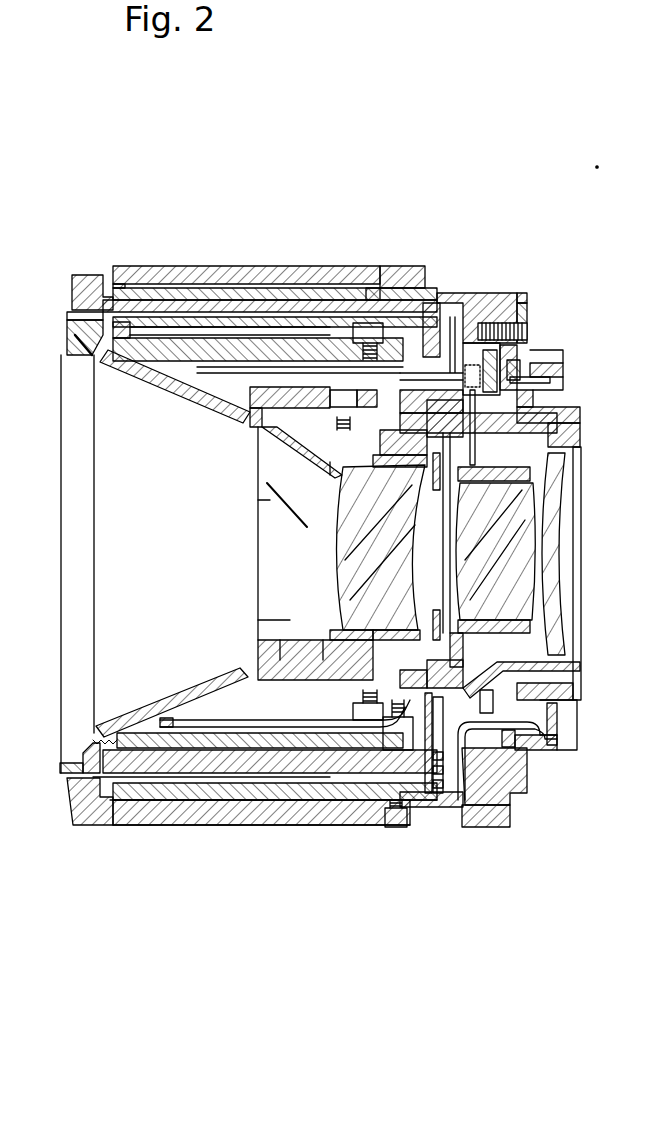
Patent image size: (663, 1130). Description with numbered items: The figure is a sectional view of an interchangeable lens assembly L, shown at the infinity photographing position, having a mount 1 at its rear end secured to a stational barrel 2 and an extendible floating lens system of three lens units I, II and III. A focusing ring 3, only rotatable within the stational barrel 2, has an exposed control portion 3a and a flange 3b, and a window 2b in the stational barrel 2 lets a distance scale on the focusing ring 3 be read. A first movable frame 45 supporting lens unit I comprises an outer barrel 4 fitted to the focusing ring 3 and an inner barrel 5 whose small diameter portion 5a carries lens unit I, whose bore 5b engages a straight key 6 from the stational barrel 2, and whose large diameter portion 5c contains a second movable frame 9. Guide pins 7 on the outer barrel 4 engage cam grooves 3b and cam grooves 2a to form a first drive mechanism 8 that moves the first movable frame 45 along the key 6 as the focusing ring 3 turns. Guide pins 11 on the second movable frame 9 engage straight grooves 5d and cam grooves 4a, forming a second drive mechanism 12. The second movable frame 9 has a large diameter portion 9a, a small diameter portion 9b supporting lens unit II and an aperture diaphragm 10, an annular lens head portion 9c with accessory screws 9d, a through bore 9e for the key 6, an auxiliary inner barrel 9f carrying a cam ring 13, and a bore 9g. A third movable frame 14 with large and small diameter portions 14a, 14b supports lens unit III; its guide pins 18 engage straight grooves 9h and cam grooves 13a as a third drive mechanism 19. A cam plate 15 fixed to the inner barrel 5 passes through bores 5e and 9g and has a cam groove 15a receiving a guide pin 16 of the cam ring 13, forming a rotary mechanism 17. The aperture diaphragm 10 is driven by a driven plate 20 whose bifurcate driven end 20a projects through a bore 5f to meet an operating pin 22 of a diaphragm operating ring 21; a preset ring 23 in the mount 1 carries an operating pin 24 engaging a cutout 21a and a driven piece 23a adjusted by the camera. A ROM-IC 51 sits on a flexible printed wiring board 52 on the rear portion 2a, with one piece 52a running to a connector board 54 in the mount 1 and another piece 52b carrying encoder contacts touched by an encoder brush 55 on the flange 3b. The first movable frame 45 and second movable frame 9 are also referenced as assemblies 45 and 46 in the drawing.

The mount 1 is at (565, 368).
The stational barrel 2 is at (503, 292).
The cam groove 2a is at (300, 825).
The window 2b is at (373, 288).
The focusing ring 3 is at (230, 284).
The control portion 3a is at (88, 272).
The cam groove 3b is at (258, 825).
The outer barrel 4 is at (412, 293).
The cam groove 4a is at (362, 323).
The first movable frame 45 is at (415, 210).
The ring assembly 46 is at (337, 878).
The inner barrel 5 is at (428, 293).
The small diameter portion 5a is at (560, 430).
The bore 5b is at (365, 421).
The large diameter portion 5c is at (94, 356).
The straight groove 5d is at (282, 333).
The bore 5e is at (415, 630).
The bore 5f is at (418, 480).
The straight key 6 is at (200, 372).
The guide pin 7 is at (268, 825).
The first drive mechanism 8 is at (200, 883).
The second movable frame 9 is at (170, 318).
The large diameter portion 9a is at (178, 352).
The small diameter portion 9b is at (535, 480).
The annular lens head portion 9c is at (68, 318).
The screws 9d is at (78, 333).
The through bore 9e is at (394, 470).
The auxiliary inner barrel 9f is at (245, 668).
The bore 9g is at (395, 700).
The straight groove 9h is at (284, 493).
The aperture diaphragm 10 is at (444, 533).
The guide pin 11 is at (312, 326).
The second drive mechanism 12 is at (262, 232).
The cam ring 13 is at (225, 690).
The cam groove 13a is at (330, 455).
The third movable frame 14 is at (258, 515).
The large diameter portion 14a is at (290, 430).
The small diameter portion 14b is at (442, 617).
The cam plate 15 is at (147, 720).
The cam groove 15a is at (285, 637).
The guide pin 16 is at (345, 662).
The rotary mechanism 17 is at (272, 610).
The guide pin 18 is at (317, 498).
The third drive mechanism 19 is at (273, 517).
The driven plate 20 is at (478, 440).
The bifurcate driven end 20a is at (472, 292).
The diaphragm operating ring 21 is at (500, 715).
The cutout 21a is at (522, 338).
The operating pin 22 is at (500, 322).
The preset ring 23 is at (515, 748).
The driven piece 23a is at (553, 382).
The operating pin 24 is at (522, 362).
The ROM-IC 51 is at (560, 700).
The flexible printed wiring board 52 is at (515, 803).
The piece 52a is at (538, 742).
The piece 52b is at (470, 805).
The connector board 54 is at (558, 723).
The full aperture F-number deviation encoder brush 55 is at (443, 820).
The lens unit I is at (553, 580).
The lens unit II is at (525, 540).
The lens unit III is at (340, 548).
The interchangeable lens assembly L is at (505, 212).